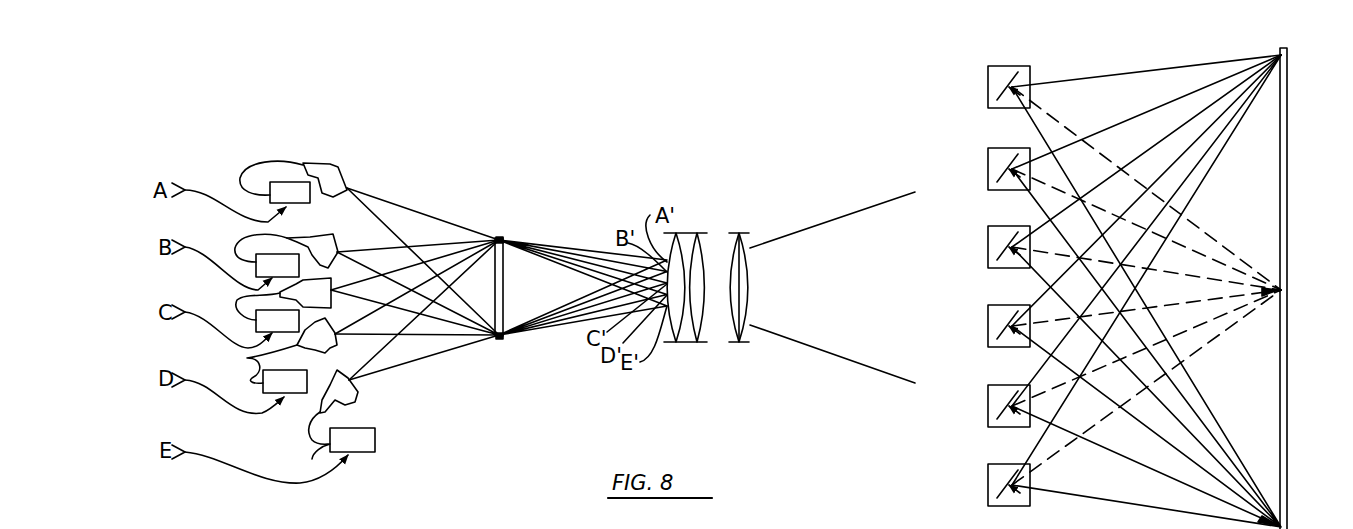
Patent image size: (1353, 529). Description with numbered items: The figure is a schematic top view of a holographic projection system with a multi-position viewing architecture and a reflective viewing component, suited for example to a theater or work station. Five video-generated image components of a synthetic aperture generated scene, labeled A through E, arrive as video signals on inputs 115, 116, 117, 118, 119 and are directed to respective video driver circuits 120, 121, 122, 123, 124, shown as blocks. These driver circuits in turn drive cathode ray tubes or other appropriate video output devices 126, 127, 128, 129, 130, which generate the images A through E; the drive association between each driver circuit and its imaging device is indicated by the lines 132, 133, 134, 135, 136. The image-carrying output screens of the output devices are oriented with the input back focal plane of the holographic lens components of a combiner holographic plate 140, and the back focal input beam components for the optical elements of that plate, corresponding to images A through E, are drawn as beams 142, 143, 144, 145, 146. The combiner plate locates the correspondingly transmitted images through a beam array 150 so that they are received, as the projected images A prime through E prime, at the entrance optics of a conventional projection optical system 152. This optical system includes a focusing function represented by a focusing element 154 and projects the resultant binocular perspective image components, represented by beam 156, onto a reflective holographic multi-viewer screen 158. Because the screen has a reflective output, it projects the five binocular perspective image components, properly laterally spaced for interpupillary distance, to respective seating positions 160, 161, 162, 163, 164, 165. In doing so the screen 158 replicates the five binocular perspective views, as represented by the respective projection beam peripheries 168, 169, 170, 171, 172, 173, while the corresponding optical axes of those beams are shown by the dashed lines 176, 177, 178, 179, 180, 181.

The input 115 is at (202, 190).
The input 116 is at (190, 247).
The input 117 is at (188, 312).
The input 118 is at (188, 380).
The input 119 is at (200, 452).
The video driver circuit 120 is at (292, 182).
The video driver circuit 121 is at (240, 249).
The video driver circuit 122 is at (245, 310).
The video driver circuit 123 is at (296, 393).
The video driver circuit 124 is at (375, 440).
The video output device 126 is at (342, 166).
The video output device 127 is at (315, 238).
The video output device 128 is at (333, 291).
The video output device 129 is at (322, 346).
The video output device 130 is at (357, 398).
The drive association line 132 is at (272, 163).
The drive association line 133 is at (247, 236).
The drive association line 134 is at (237, 299).
The drive association line 135 is at (247, 358).
The drive association line 136 is at (312, 459).
The combiner holographic plate 140 is at (505, 238).
The back focal input beam component 142 is at (403, 206).
The back focal input beam component 143 is at (390, 248).
The back focal input beam component 144 is at (440, 260).
The back focal input beam component 145 is at (462, 260).
The back focal input beam component 146 is at (430, 357).
The beam array 150 is at (607, 205).
The projection optical system 152 is at (707, 228).
The focusing element 154 is at (741, 236).
The beam 156 is at (868, 248).
The reflective holographic multi-viewer screen 158 is at (1289, 52).
The seating position 160 is at (988, 87).
The seating position 161 is at (988, 169).
The seating position 162 is at (988, 247).
The seating position 163 is at (988, 326).
The seating position 164 is at (988, 406).
The seating position 165 is at (988, 485).
The projection beam periphery 168 is at (1068, 78).
The projection beam periphery 169 is at (1112, 123).
The projection beam periphery 170 is at (1125, 160).
The projection beam periphery 171 is at (1190, 148).
The projection beam periphery 172 is at (1193, 172).
The projection beam periphery 173 is at (1203, 196).
The optical axis 176 is at (1045, 112).
The optical axis 177 is at (1048, 185).
The optical axis 178 is at (1195, 276).
The optical axis 179 is at (1158, 310).
The optical axis 180 is at (1197, 327).
The optical axis 181 is at (1192, 354).